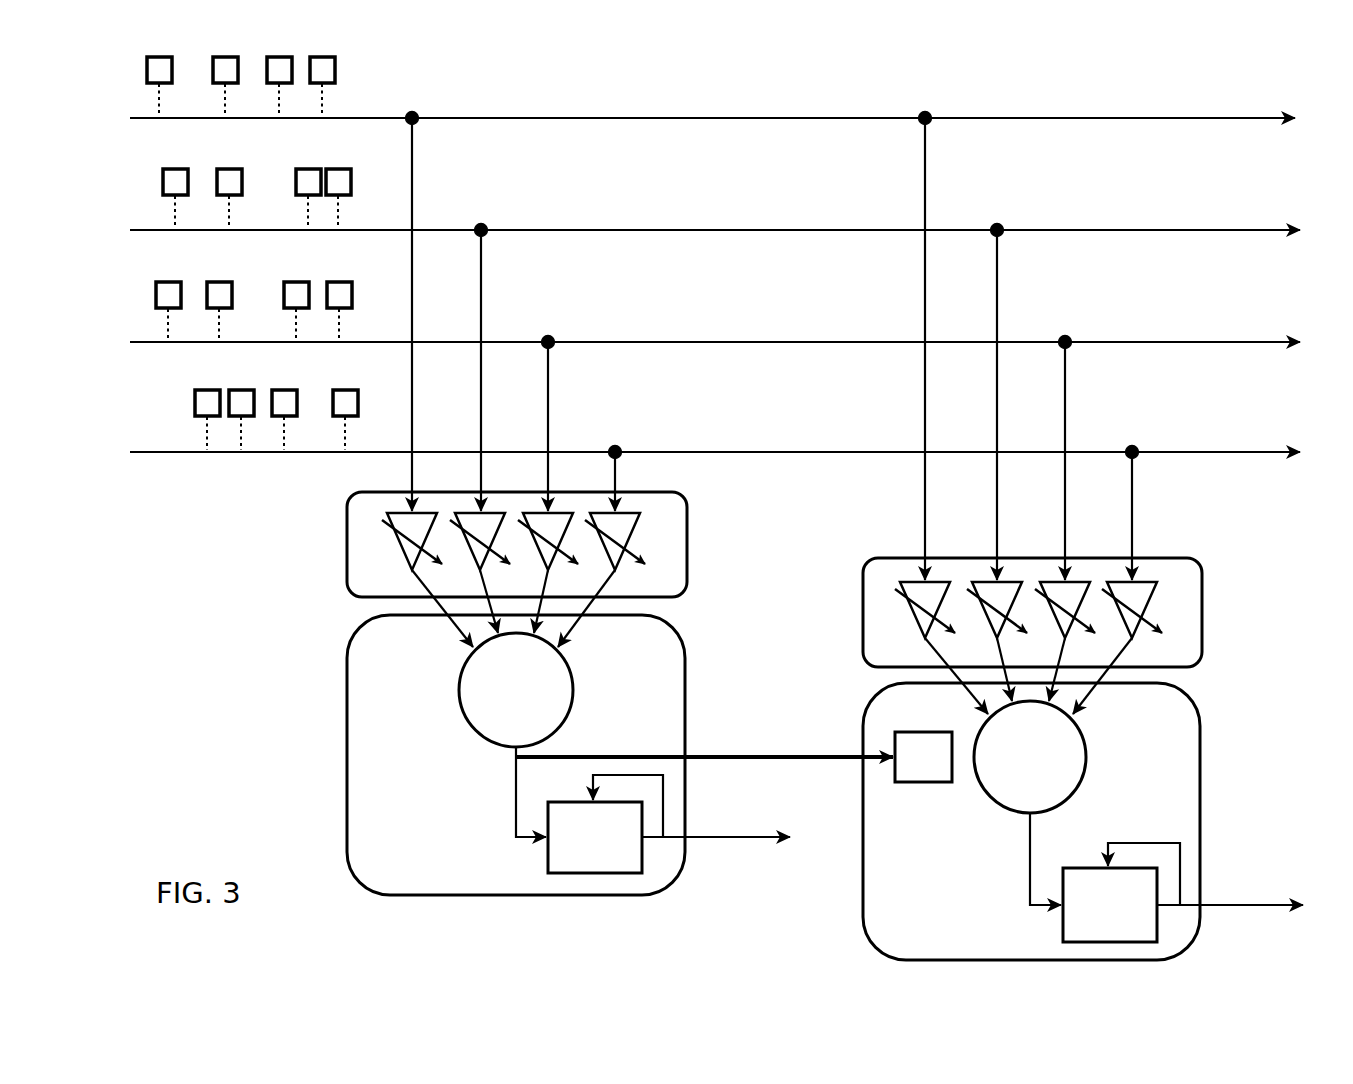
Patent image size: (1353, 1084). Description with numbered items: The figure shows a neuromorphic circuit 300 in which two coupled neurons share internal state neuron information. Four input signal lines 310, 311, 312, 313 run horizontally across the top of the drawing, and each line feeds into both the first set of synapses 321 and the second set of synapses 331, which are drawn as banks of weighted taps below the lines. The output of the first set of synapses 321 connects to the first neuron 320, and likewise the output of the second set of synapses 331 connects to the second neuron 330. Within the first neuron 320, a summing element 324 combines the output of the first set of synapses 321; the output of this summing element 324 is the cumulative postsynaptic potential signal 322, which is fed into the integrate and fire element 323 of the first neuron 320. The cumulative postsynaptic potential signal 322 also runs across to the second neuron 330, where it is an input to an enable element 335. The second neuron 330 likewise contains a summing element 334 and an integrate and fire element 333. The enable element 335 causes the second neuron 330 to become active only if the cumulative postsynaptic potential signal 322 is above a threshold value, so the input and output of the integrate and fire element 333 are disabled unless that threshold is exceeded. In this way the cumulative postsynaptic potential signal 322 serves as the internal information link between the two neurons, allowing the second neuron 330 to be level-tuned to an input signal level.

The neuromorphic circuit 300 is at (147, 724).
The input signal line 310 is at (525, 112).
The input signal line 311 is at (613, 224).
The input signal line 312 is at (705, 334).
The input signal line 313 is at (792, 447).
The first neuron 320 is at (337, 687).
The first set of synapses 321 is at (338, 527).
The cumulative postsynaptic potential signal 322 is at (642, 749).
The integrate and fire element 323 is at (540, 858).
The summing element 324 is at (462, 720).
The second neuron 330 is at (852, 732).
The second set of synapses 331 is at (860, 600).
The integrate and fire element 333 is at (1062, 932).
The summing element 334 is at (1090, 734).
The enable element 335 is at (910, 790).